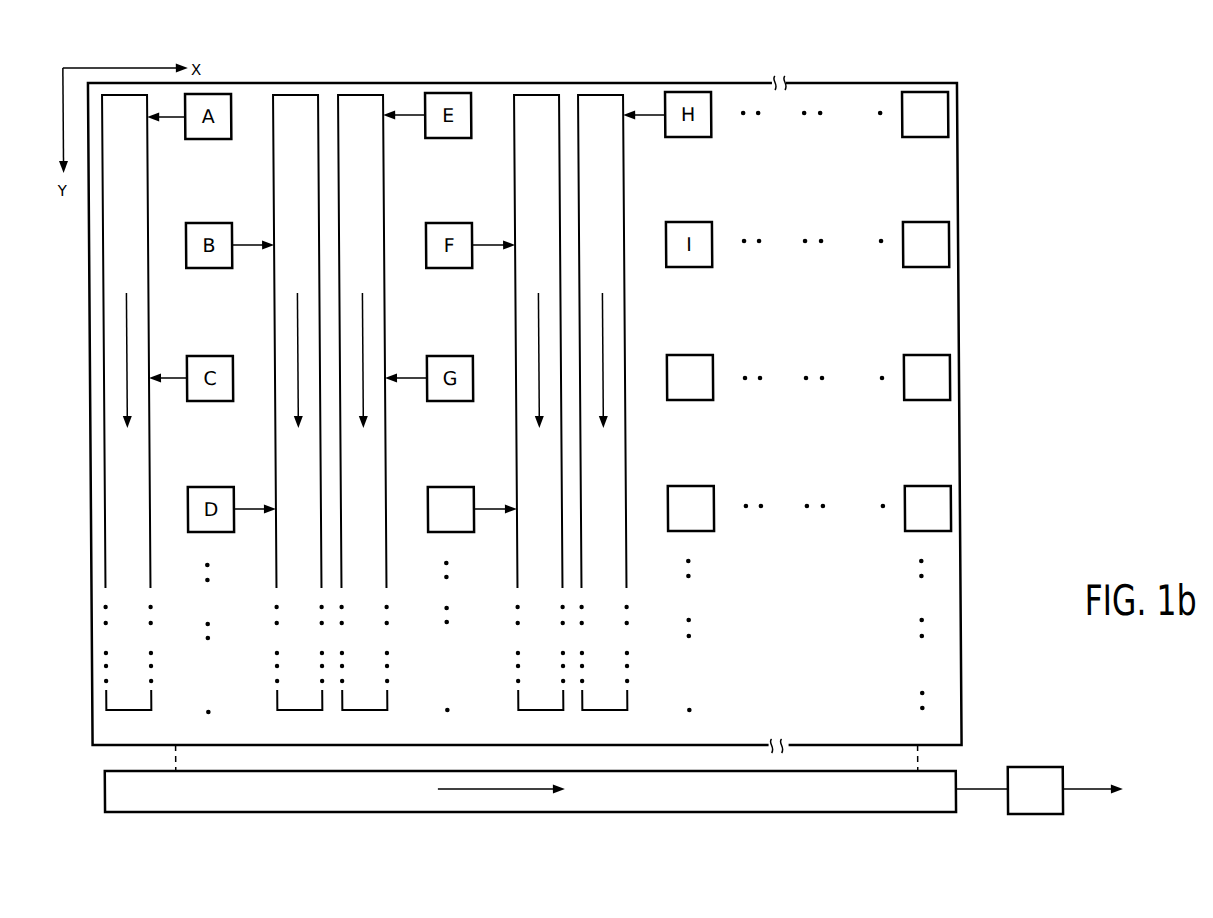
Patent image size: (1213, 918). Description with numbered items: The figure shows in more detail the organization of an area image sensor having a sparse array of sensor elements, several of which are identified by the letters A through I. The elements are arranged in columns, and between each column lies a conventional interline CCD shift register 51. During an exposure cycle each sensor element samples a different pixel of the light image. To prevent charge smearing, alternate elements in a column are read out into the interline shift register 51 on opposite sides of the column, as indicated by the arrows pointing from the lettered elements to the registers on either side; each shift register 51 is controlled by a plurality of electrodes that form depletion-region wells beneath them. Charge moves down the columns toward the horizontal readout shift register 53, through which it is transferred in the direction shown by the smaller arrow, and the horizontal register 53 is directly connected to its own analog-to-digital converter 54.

The interline CCD shift register 51 is at (115, 152).
The horizontal readout shift register 53 is at (393, 812).
The analog-to-digital converter 54 is at (1061, 813).